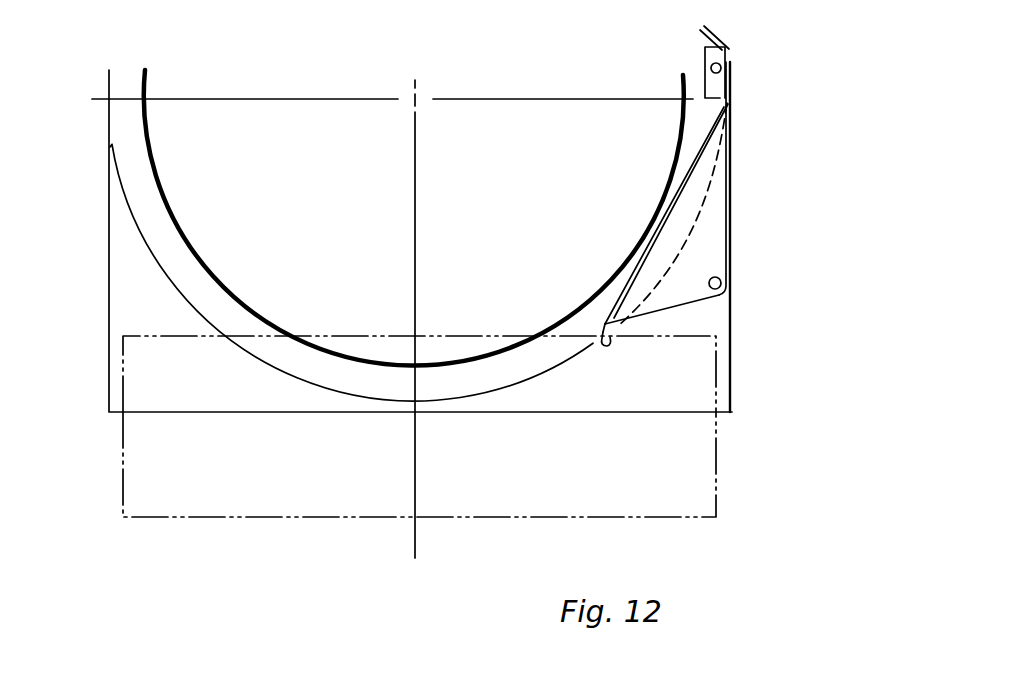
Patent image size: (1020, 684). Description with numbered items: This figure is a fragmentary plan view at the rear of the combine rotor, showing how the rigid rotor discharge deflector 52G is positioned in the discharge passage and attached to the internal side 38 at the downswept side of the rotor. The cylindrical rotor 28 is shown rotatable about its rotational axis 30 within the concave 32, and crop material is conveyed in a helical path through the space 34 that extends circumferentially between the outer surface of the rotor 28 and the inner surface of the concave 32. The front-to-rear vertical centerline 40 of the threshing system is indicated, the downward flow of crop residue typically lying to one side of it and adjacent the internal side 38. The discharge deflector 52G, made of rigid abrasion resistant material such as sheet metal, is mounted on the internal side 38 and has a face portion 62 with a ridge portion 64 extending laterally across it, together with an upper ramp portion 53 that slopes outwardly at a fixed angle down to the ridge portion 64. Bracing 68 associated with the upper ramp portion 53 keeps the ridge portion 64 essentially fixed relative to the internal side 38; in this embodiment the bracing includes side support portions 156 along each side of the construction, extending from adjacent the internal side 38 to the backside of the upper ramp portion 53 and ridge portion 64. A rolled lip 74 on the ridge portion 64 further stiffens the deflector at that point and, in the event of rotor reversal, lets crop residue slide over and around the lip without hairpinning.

The rotor 28 is at (688, 78).
The rotational axis 30 is at (420, 96).
The concave 32 is at (145, 242).
The space 34 is at (125, 130).
The vertical centerline 40 is at (415, 182).
The upper ramp portion 53 is at (690, 153).
The discharge deflector 52G is at (730, 52).
The face portion 62 is at (615, 303).
The ridge portion 64 is at (597, 327).
The rolled lip 74 is at (600, 346).
The side support portions 156 is at (715, 218).
The internal side 38 is at (727, 305).
The bracing 68 is at (672, 310).